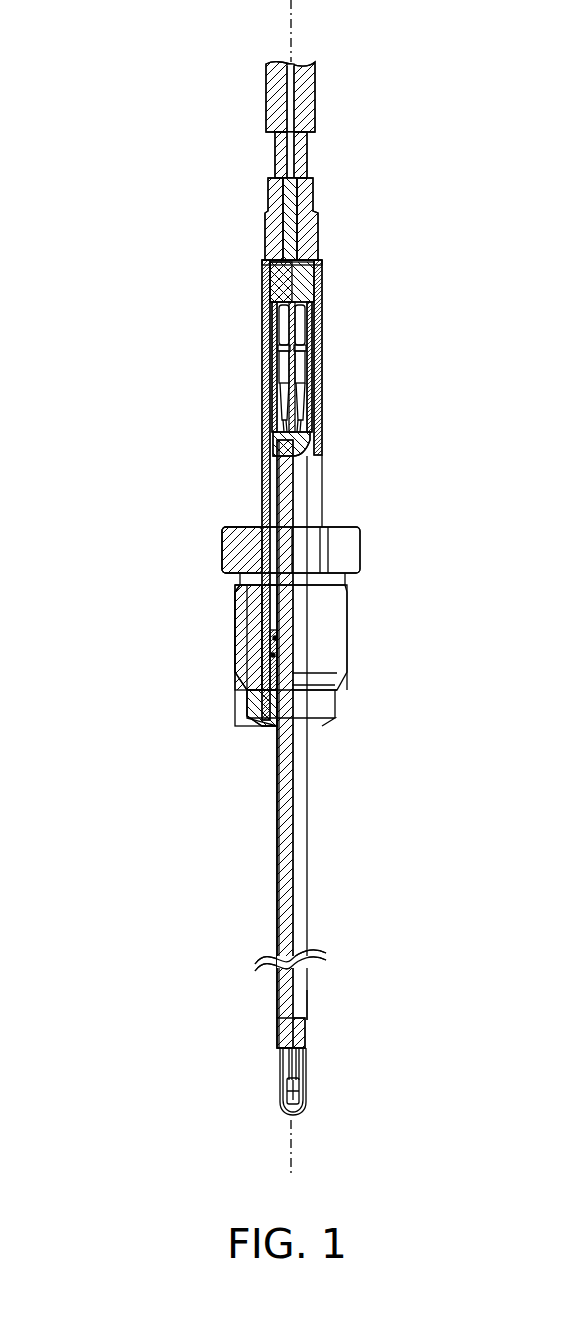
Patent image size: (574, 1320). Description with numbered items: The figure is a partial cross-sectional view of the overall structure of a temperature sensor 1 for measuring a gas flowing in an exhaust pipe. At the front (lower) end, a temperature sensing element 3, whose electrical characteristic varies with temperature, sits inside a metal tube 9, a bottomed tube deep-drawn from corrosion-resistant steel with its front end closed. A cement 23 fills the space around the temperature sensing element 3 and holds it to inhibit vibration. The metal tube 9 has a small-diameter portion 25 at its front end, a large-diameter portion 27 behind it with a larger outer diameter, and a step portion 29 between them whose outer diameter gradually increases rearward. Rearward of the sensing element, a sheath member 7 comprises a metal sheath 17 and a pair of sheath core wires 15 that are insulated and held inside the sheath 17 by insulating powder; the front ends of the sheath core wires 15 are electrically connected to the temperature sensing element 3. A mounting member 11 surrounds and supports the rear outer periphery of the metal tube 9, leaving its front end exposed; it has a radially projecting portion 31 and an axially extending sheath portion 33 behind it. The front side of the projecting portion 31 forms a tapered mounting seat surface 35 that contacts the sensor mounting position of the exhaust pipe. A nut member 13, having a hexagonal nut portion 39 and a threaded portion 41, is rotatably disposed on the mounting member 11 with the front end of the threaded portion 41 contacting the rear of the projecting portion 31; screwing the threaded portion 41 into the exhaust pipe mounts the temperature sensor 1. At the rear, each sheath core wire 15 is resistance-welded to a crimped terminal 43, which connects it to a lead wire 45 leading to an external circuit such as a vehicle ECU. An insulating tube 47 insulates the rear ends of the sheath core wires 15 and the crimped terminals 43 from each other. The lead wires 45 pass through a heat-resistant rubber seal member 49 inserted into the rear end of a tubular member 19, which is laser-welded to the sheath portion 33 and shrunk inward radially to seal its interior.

The temperature sensor 1 is at (98, 197).
The temperature sensing element 3 is at (278, 1098).
The sheath member 7 is at (279, 878).
The metal tube 9 is at (300, 820).
The mounting member 11 is at (155, 640).
The nut member 13 is at (430, 528).
The sheath core wires 15 is at (284, 418).
The sheath 17 is at (280, 1012).
The tubular member 19 is at (262, 464).
The cement 23 is at (287, 1085).
The small-diameter portion 25 is at (301, 1084).
The large-diameter portion 27 is at (307, 999).
The step portion 29 is at (300, 1048).
The projecting portion 31 is at (250, 704).
The sheath portion 33 is at (265, 655).
The mounting seat surface 35 is at (263, 718).
The hexagonal nut portion 39 is at (360, 550).
The threaded portion 41 is at (347, 594).
The crimped terminal 43 is at (280, 345).
The lead wire 45 is at (276, 153).
The insulating tube 47 is at (312, 388).
The seal member 49 is at (313, 190).